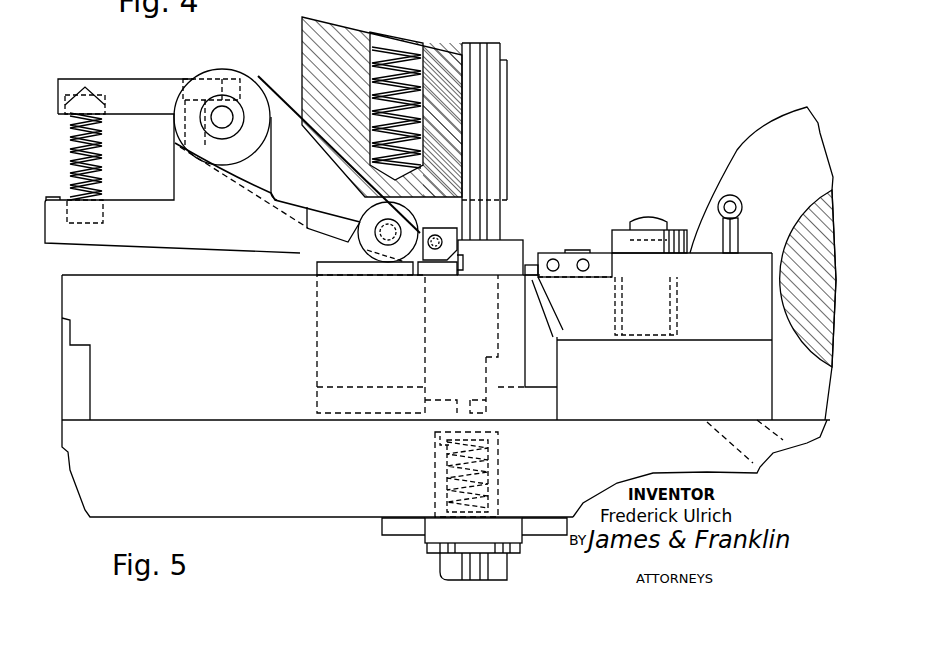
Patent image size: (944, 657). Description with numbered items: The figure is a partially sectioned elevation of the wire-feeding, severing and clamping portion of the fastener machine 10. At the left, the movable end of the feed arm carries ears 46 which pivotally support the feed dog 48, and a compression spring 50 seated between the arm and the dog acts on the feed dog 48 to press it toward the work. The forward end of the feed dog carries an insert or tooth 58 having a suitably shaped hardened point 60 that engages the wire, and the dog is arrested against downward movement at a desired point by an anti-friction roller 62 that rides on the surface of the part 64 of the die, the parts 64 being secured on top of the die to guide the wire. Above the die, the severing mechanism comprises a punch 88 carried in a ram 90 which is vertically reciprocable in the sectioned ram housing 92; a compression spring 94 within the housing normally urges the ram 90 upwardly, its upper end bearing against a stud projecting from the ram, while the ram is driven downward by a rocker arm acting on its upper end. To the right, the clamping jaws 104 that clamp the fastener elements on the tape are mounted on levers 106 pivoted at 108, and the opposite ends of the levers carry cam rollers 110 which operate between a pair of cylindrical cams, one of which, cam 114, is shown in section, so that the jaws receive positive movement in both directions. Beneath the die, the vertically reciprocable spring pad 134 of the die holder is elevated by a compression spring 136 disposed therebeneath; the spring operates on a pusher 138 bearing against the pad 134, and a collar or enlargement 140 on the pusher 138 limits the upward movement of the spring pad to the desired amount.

The machine assembly 10 is at (478, 0).
The ears 46 is at (220, 71).
The feed dog 48 is at (347, 222).
The compression spring 50 is at (103, 155).
The insert or tooth 58 is at (438, 236).
The hardened point 60 is at (462, 268).
The anti-friction roller 62 is at (372, 213).
The part of the die 64 is at (390, 265).
The punch 88 is at (505, 222).
The ram 90 is at (453, 82).
The ram housing 92 is at (323, 67).
The compression spring 94 is at (385, 46).
The clamping jaws 104 is at (540, 254).
The levers 106 is at (592, 252).
The pivot 108 is at (653, 216).
The cam rollers 110 is at (790, 243).
The cylindrical cam 114 is at (810, 208).
The spring pad 134 is at (424, 410).
The compression spring 136 is at (490, 481).
The pusher 138 is at (498, 432).
The collar or enlargement 140 is at (438, 442).